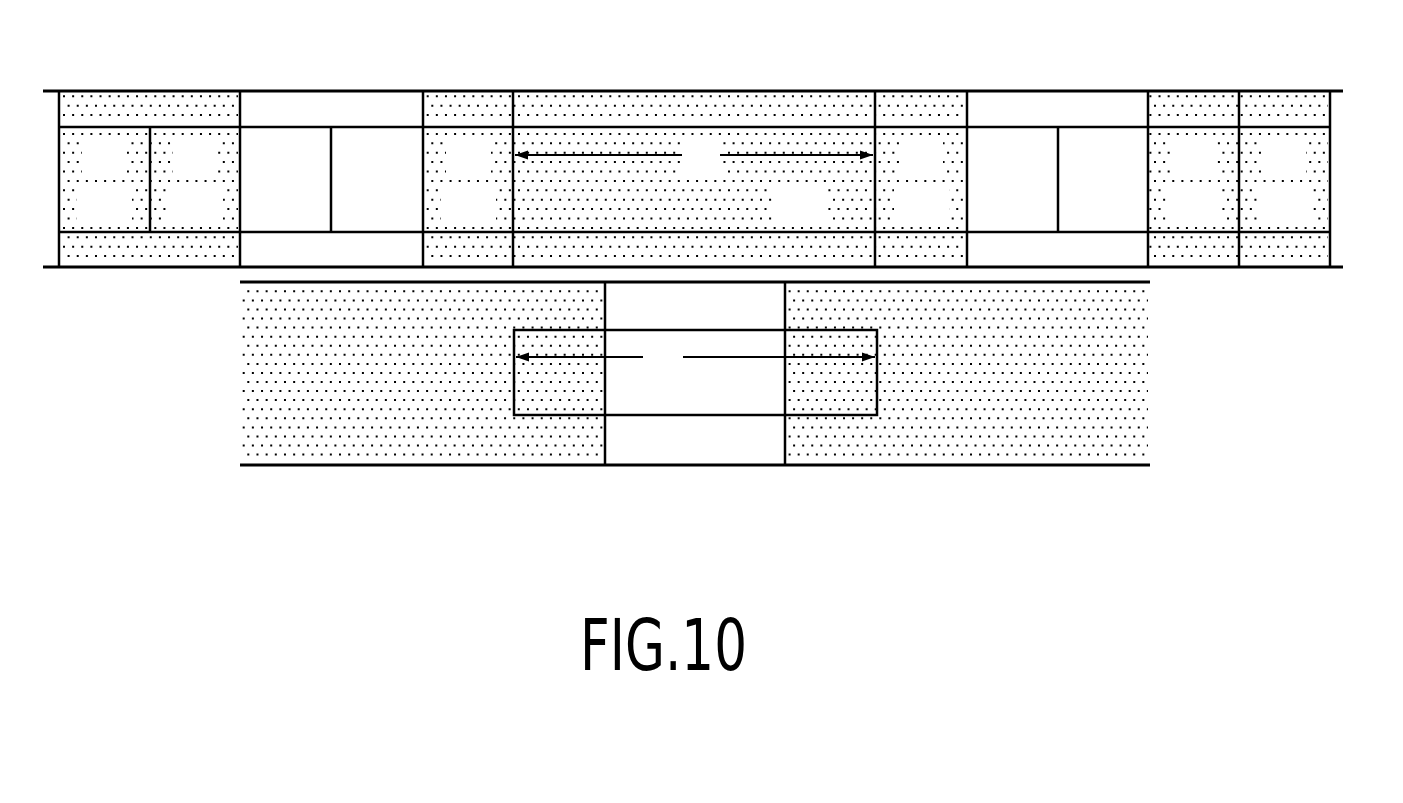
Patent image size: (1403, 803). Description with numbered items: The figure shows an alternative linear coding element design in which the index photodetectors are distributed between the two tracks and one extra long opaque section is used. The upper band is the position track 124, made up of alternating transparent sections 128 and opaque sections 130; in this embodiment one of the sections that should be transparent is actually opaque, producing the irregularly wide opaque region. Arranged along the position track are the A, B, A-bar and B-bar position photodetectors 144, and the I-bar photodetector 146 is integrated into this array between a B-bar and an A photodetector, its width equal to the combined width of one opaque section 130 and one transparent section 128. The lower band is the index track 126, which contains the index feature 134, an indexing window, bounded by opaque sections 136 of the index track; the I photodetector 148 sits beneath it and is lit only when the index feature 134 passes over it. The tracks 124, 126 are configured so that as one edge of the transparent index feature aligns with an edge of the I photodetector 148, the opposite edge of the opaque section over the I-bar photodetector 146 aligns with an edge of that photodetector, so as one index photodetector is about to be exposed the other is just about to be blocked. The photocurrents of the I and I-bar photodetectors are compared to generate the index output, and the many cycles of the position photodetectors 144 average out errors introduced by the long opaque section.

The position track 124 is at (715, 148).
The index track 126 is at (720, 411).
The transparent section 128 is at (302, 91).
The opaque section 130 is at (133, 91).
The index feature 134 is at (730, 478).
The opaque section of the index track 136 is at (393, 478).
The position photodetector 144 is at (694, 179).
The I/ photodetector 146 is at (823, 218).
The I photodetector 148 is at (763, 408).